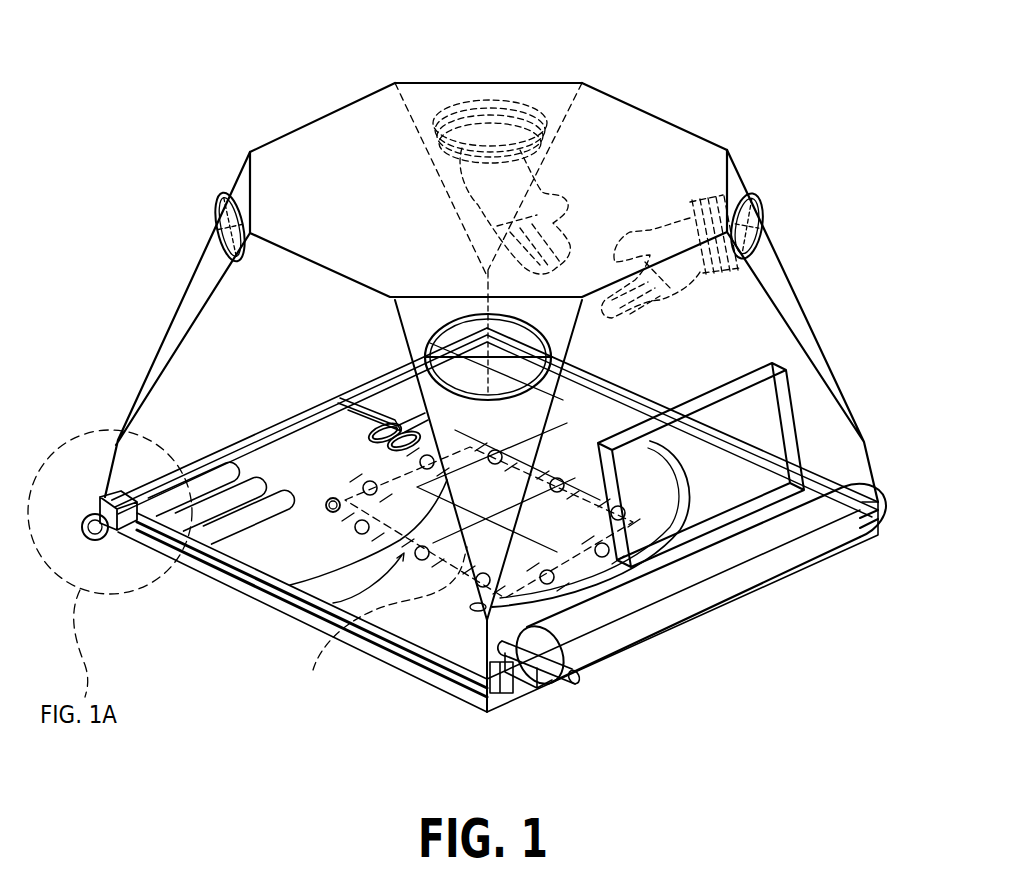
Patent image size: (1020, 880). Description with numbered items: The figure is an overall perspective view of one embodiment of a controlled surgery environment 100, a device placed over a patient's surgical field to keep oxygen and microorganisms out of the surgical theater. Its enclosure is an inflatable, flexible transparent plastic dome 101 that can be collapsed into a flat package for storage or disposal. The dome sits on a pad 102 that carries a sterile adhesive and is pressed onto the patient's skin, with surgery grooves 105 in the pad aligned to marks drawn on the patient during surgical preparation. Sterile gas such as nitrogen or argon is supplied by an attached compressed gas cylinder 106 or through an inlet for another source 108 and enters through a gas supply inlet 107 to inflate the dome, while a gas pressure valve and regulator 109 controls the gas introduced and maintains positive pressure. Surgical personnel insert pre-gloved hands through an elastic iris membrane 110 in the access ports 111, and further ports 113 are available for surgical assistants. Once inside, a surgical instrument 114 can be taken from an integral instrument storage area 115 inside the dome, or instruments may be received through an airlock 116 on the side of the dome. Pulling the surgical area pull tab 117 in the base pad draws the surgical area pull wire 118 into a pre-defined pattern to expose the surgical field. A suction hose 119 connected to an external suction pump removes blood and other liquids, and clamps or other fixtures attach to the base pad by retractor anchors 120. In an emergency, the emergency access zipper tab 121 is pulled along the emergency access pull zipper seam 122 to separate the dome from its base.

The controlled surgery environment 100 is at (325, 142).
The dome 101 is at (657, 113).
The pad 102 is at (473, 697).
The surgery grooves 105 is at (262, 575).
The compressed gas cylinder 106 is at (757, 563).
The gas supply inlet 107 is at (500, 695).
The inlet for another source 108 is at (578, 683).
The gas pressure valve and regulator 109 is at (507, 690).
The elastic iris membrane 110 is at (217, 238).
The access ports 111 is at (220, 217).
The ports 113 is at (488, 140).
The surgical instrument 114 is at (327, 403).
The instrument storage area 115 is at (350, 410).
The airlock 116 is at (793, 425).
The surgical area pull tab 117 is at (326, 498).
The surgical area pull wire 118 is at (382, 632).
The suction hose 119 is at (476, 606).
The retractor anchors 120 is at (313, 590).
The emergency access zipper tab 121 is at (113, 537).
The emergency access pull zipper seam 122 is at (157, 535).